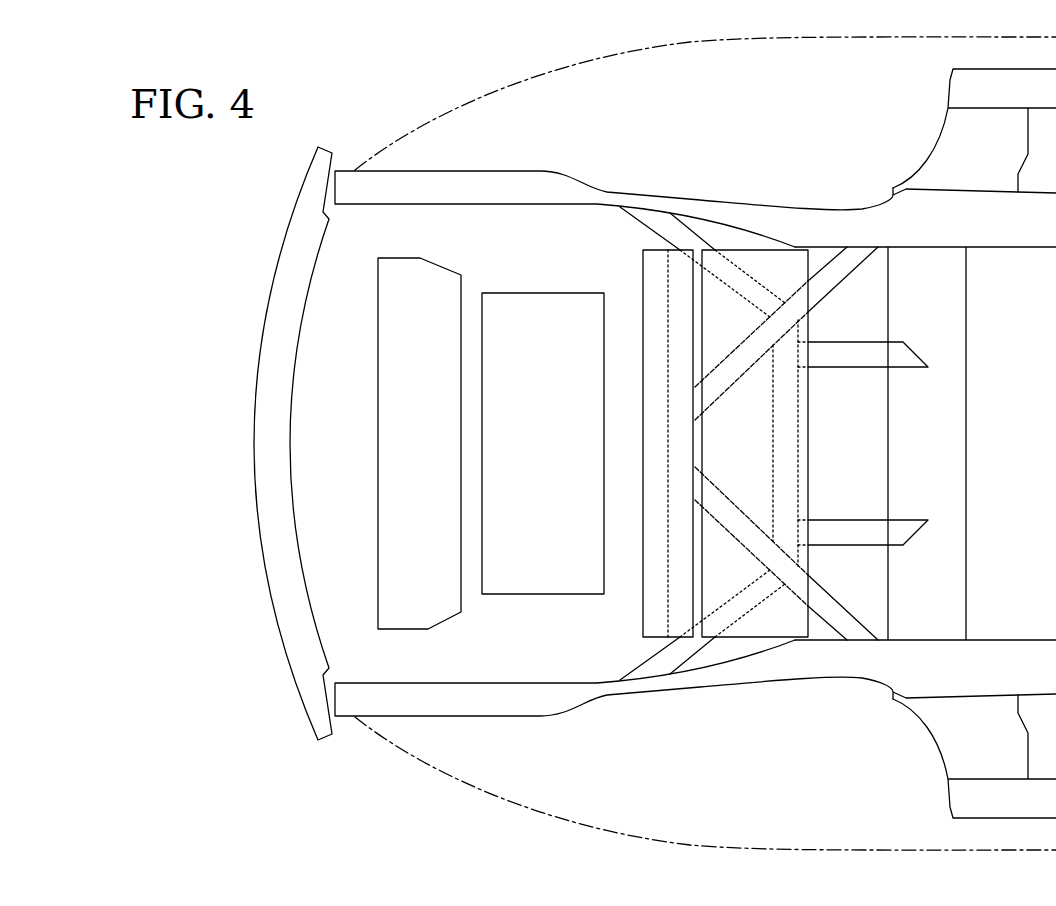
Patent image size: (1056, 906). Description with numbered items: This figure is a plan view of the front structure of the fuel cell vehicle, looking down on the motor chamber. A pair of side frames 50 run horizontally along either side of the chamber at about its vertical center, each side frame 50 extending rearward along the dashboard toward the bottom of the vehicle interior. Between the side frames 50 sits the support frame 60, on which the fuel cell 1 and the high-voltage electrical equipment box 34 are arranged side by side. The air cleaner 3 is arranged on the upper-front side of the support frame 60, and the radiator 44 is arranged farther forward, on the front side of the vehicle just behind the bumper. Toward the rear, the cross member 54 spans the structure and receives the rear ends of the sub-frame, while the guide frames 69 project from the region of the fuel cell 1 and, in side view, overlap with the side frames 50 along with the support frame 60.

The fuel cell 1 is at (730, 458).
The air cleaner 3 is at (535, 458).
The high-voltage electrical equipment box 34 is at (652, 270).
The radiator 44 is at (405, 458).
The side frame 50 is at (498, 186).
The cross member 54 is at (950, 450).
The support frame 60 is at (715, 240).
The guide frame 69 is at (853, 355).